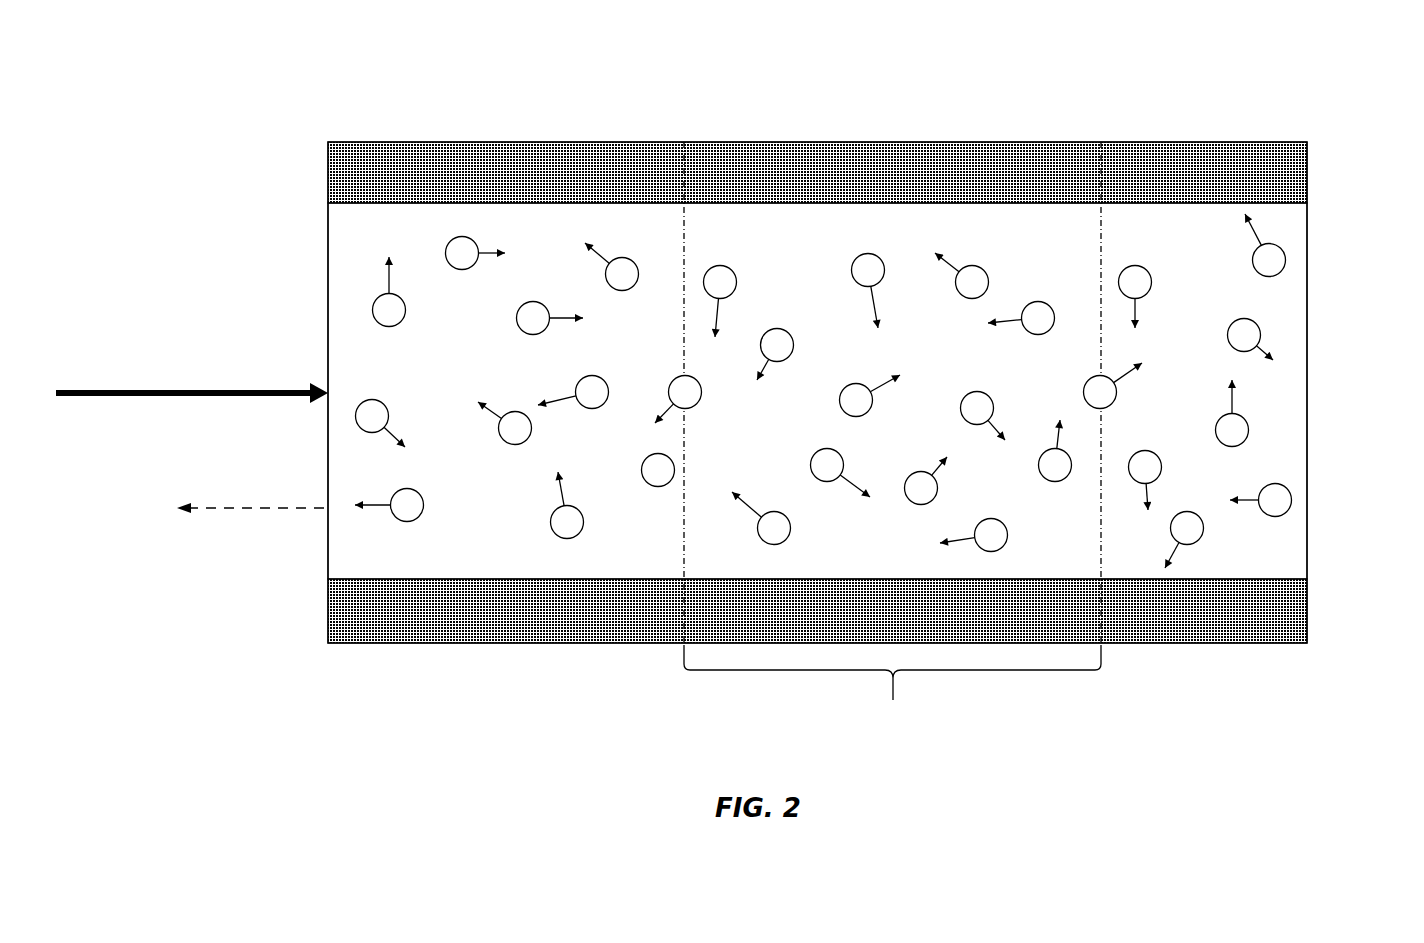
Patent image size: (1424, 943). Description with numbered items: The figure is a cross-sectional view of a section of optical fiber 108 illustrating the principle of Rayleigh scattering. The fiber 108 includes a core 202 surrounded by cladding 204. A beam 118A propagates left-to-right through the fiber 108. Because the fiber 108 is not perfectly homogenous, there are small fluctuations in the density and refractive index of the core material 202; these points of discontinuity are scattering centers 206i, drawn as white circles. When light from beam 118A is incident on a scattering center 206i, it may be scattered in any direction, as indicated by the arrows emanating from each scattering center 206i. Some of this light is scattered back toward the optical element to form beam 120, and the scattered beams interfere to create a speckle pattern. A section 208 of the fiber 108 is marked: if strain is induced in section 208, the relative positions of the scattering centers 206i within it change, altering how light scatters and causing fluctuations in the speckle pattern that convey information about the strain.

The fiber 108 is at (1345, 110).
The beam 118A is at (156, 381).
The beam 120 is at (257, 502).
The core 202 is at (874, 197).
The cladding 204 is at (610, 140).
The scattering centers 206i is at (462, 224).
The section 208 is at (892, 444).